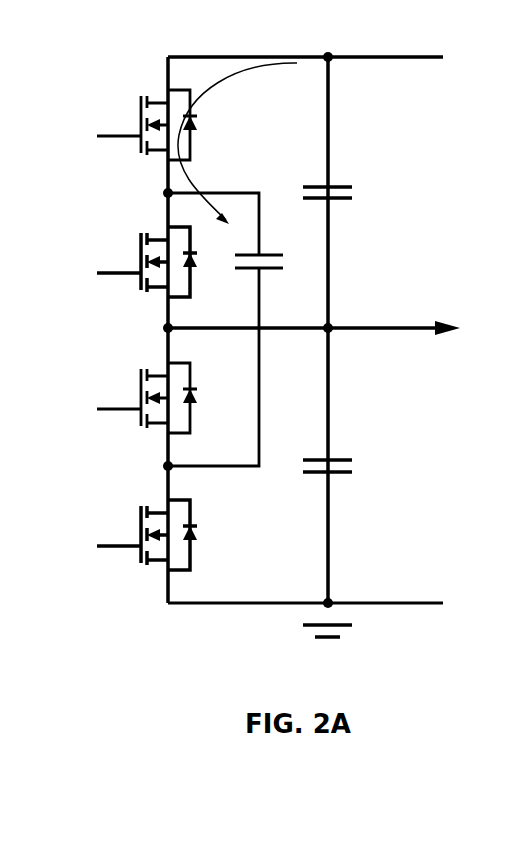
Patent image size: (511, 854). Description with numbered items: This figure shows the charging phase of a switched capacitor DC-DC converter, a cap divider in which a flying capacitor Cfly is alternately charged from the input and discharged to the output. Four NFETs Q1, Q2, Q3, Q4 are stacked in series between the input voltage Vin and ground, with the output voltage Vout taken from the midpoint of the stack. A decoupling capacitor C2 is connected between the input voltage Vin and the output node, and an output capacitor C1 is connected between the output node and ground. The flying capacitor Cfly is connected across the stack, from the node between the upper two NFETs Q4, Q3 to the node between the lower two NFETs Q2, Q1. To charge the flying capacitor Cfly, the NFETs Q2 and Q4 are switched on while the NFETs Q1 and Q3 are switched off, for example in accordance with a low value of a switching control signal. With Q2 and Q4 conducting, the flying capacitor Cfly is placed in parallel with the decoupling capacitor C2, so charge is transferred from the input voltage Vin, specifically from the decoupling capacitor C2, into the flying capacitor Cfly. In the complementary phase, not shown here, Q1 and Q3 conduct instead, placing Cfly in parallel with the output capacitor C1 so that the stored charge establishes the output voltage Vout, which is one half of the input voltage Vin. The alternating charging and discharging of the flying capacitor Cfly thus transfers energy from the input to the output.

The NFET Q1 is at (143, 535).
The NFET Q2 is at (143, 398).
The NFET Q3 is at (143, 262).
The NFET Q4 is at (143, 125).
The flying capacitor Cfly is at (241, 329).
The output capacitor C1 is at (346, 470).
The decoupling capacitor C2 is at (346, 196).
The input voltage Vin is at (305, 76).
The output voltage Vout is at (326, 344).